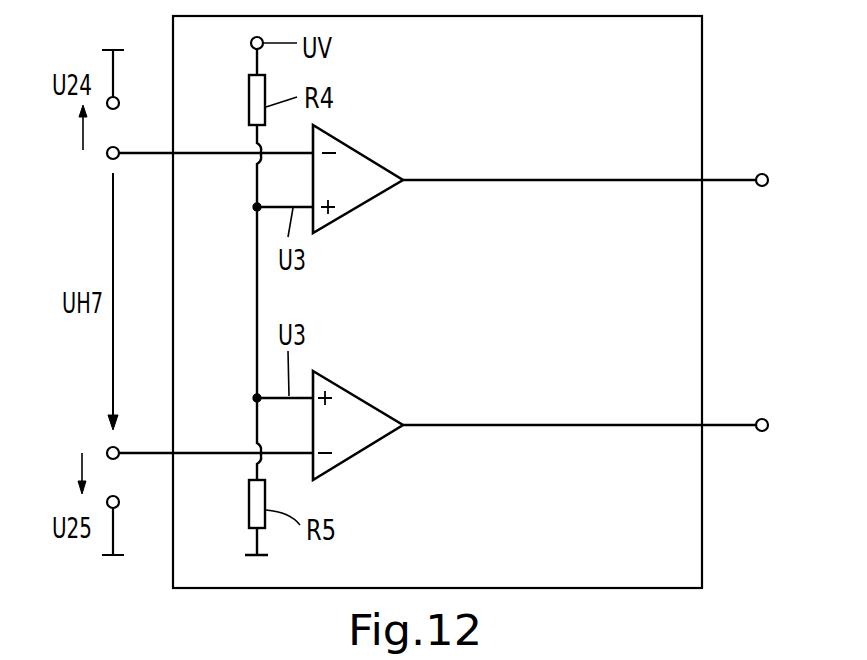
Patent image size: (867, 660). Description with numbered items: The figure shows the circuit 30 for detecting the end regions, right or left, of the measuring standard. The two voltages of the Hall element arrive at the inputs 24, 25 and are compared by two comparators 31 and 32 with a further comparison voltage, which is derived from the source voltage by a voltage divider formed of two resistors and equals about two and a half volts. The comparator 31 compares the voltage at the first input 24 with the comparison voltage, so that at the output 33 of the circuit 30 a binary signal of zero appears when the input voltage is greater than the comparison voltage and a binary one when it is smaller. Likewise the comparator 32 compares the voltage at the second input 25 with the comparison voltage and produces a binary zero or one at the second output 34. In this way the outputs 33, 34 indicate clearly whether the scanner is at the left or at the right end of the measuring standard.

The input terminal for voltage U24 24 is at (147, 150).
The input terminal for voltage U25 25 is at (150, 453).
The circuit 30 is at (693, 535).
The comparator 31 is at (360, 164).
The comparator 32 is at (352, 403).
The output 33 is at (725, 180).
The second output 34 is at (725, 425).